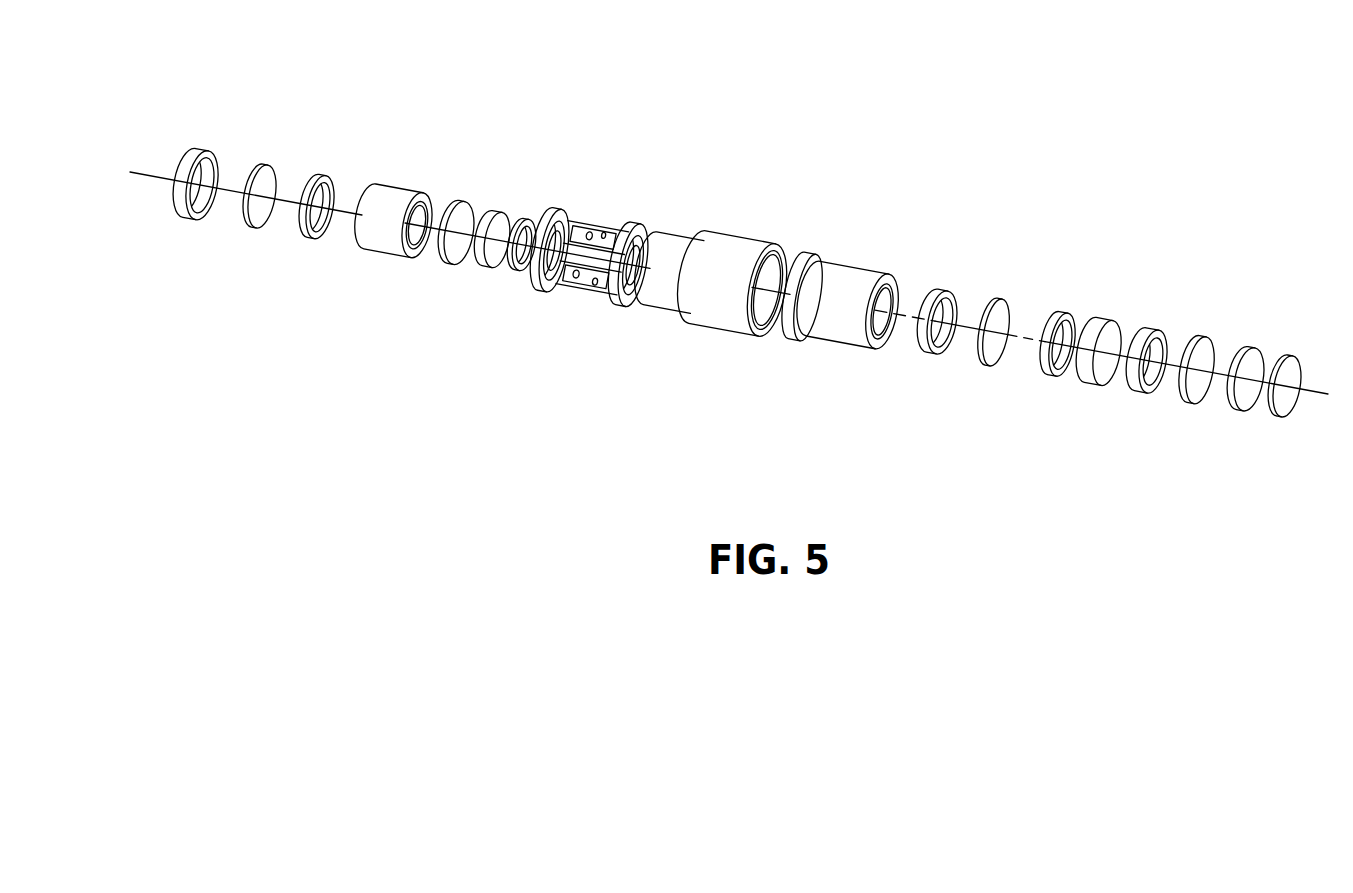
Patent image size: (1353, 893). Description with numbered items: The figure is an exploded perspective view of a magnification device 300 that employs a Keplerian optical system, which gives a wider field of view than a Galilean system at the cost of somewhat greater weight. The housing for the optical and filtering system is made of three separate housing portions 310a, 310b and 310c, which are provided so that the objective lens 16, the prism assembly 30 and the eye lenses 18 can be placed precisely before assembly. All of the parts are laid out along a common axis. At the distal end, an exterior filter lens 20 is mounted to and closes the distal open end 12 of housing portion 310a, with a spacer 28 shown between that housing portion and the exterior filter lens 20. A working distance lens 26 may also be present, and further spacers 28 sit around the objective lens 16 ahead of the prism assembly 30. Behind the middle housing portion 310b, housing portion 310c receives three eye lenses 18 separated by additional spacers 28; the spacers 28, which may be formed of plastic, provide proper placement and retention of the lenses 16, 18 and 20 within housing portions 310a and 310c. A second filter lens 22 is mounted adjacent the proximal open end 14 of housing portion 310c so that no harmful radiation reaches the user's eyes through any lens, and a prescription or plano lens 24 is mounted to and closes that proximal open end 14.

The magnification device 300 is at (671, 100).
The distal open end 12 is at (356, 174).
The proximal open end 14 is at (884, 296).
The objective lens 16 is at (482, 268).
The eye lens 18 is at (987, 360).
The exterior filter lens 20 is at (251, 229).
The second filter lens 22 is at (1251, 357).
The prescription or plano lens 24 is at (1297, 368).
The working distance lens 26 is at (445, 262).
The spacer 28 is at (186, 222).
The prism assembly 30 is at (548, 199).
The housing portion 310a is at (388, 205).
The housing portion 310b is at (692, 236).
The housing portion 310c is at (841, 283).